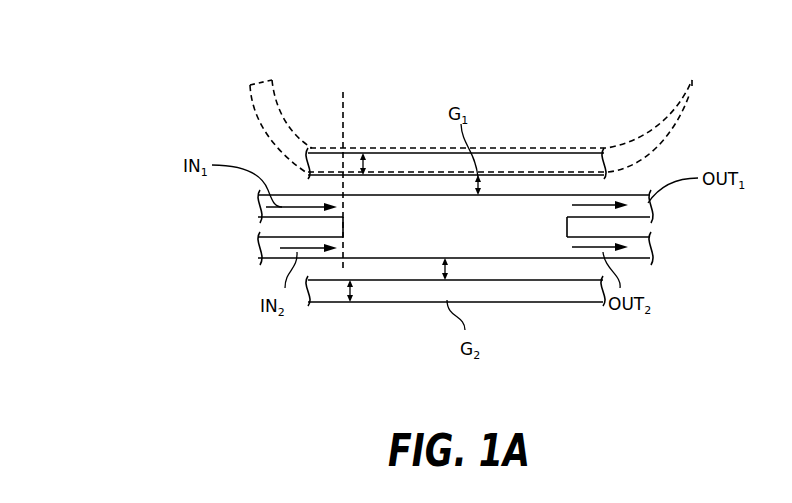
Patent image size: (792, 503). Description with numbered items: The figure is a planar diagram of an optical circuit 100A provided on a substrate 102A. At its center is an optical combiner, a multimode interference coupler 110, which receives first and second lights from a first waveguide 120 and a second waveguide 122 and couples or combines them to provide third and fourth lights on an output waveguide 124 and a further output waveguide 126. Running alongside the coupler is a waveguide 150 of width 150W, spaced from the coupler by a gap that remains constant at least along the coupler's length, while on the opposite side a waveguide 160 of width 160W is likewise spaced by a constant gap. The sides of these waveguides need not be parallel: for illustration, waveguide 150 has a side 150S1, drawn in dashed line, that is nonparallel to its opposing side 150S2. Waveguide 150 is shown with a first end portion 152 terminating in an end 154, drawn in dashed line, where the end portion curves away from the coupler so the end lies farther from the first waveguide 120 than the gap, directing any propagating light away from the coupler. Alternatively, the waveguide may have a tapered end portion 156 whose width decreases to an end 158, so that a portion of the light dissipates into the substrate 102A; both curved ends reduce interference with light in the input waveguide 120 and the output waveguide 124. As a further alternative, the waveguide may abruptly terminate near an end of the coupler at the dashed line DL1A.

The optical circuit 100A is at (194, 83).
The substrate 102A is at (188, 131).
The multimode interference (MMI) coupler 110 is at (471, 240).
The first waveguide 120 is at (258, 212).
The second waveguide 122 is at (258, 243).
The waveguide 124 is at (652, 206).
The waveguide 126 is at (652, 248).
The waveguide 150 is at (443, 160).
The first end portion 152 is at (304, 89).
The end 154 is at (258, 80).
The tapered end portion 156 is at (653, 101).
The end 158 is at (692, 82).
The waveguide 160 is at (530, 290).
The width of waveguide 150 150W is at (365, 150).
The side of waveguide 150 150S1 is at (518, 142).
The opposing side of waveguide 150 150S2 is at (573, 173).
The width of waveguide 160 160W is at (350, 303).
The dashed line DL1A is at (344, 105).